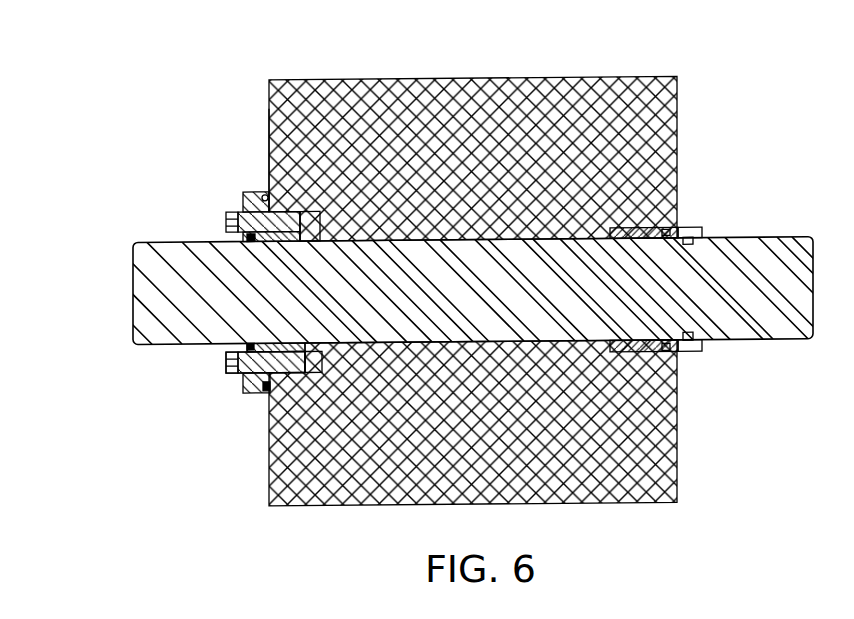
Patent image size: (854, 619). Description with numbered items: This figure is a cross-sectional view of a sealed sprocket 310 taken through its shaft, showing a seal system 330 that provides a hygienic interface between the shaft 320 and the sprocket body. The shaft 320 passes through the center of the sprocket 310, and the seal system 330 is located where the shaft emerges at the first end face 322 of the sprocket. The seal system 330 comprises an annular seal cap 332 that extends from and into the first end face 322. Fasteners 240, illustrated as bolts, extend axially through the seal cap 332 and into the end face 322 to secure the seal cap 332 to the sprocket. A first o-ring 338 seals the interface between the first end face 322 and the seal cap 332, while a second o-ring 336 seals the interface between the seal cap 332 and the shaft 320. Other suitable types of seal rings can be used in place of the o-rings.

The sealed sprocket 310 is at (373, 100).
The shaft 320 is at (137, 298).
The first end face 322 is at (268, 110).
The seal system 330 is at (193, 363).
The annular seal cap 332 is at (244, 379).
The second o-ring 336 is at (224, 241).
The first o-ring 338 is at (264, 193).
The fasteners 240 is at (224, 209).